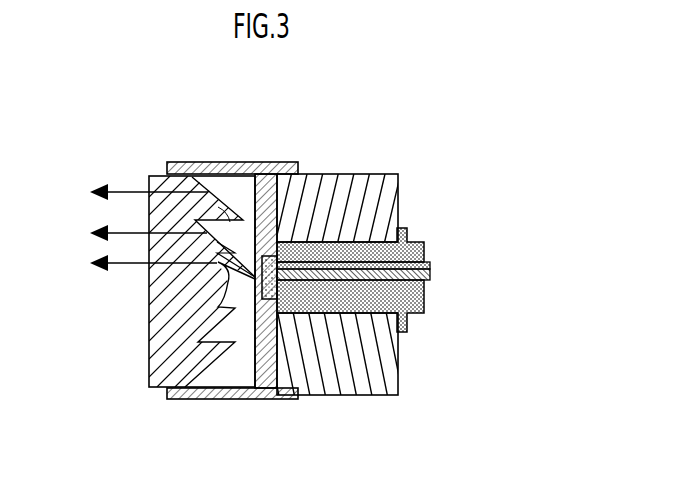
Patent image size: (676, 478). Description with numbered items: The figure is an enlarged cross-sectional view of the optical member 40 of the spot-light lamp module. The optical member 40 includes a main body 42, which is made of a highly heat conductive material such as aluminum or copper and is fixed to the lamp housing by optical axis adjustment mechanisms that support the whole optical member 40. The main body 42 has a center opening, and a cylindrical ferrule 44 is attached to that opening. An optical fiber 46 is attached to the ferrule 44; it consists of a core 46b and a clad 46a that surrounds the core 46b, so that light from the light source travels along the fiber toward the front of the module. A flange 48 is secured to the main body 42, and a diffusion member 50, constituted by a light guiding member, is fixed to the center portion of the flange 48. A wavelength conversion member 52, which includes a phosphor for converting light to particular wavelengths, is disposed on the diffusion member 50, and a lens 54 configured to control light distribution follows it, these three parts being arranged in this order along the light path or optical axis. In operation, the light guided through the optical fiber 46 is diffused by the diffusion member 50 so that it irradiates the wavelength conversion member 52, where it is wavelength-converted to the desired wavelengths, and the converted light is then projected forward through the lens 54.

The optical member 40 is at (423, 157).
The main body 42 is at (347, 173).
The cylindrical ferrule 44 is at (410, 239).
The optical fiber 46 is at (403, 275).
The clad 46a is at (432, 265).
The core 46b is at (432, 277).
The flange 48 is at (227, 161).
The diffusion member 50 is at (315, 399).
The wavelength conversion member 52 is at (255, 284).
The lens 54 is at (148, 306).